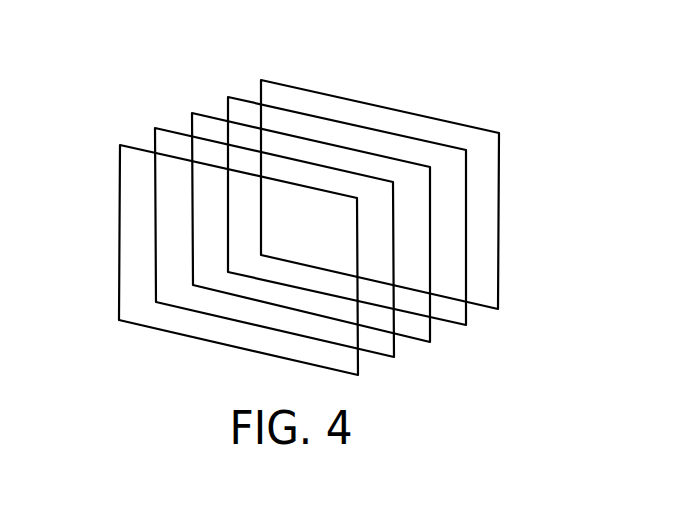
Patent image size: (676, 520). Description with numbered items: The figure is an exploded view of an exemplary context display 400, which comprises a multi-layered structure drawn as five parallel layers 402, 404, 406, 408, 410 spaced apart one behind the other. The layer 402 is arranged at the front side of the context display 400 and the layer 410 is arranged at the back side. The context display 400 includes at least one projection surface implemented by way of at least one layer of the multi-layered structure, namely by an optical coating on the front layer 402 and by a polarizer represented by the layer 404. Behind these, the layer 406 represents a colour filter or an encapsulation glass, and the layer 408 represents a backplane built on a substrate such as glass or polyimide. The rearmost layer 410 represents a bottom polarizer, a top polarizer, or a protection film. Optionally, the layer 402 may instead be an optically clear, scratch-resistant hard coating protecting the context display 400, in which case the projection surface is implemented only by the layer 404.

The context display 400 is at (459, 48).
The layer 402 is at (202, 260).
The layer 404 is at (238, 225).
The layer 406 is at (277, 205).
The layer 408 is at (315, 184).
The layer 410 is at (360, 165).